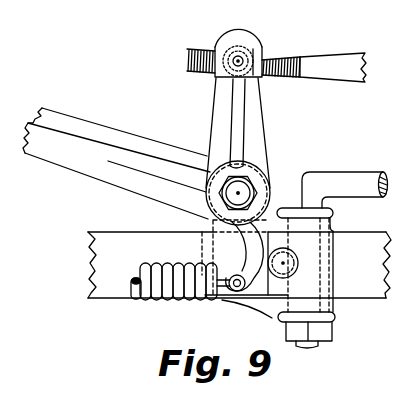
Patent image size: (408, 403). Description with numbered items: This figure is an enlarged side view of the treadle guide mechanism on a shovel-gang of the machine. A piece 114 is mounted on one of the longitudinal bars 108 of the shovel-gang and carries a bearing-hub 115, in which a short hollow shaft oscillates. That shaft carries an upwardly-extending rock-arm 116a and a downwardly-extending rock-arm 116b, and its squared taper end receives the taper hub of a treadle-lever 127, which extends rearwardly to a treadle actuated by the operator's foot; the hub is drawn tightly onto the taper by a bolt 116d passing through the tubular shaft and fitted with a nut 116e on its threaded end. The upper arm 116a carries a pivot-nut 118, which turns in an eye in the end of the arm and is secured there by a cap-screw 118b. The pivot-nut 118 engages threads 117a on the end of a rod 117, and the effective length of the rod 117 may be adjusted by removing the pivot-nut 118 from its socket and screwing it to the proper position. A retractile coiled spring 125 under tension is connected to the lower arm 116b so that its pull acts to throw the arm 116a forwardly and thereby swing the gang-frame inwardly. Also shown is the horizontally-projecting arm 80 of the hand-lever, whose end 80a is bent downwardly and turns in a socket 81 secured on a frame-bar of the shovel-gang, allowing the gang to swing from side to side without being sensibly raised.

The horizontally-projecting arm 80 is at (357, 175).
The downwardly-bent end 80a is at (308, 201).
The socket 81 is at (337, 313).
The longitudinal bar 108 is at (239, 265).
The piece 114 is at (231, 303).
The bearing-hub 115 is at (204, 194).
The upwardly-extending rock-arm 116a is at (250, 134).
The downwardly-extending rock-arm 116b is at (243, 254).
The bolt 116d is at (236, 195).
The nut 116e is at (253, 180).
The rod 117 is at (345, 66).
The threads 117a is at (210, 67).
The pivot-nut 118 is at (219, 45).
The cap-screw 118b is at (260, 45).
The retractile coiled spring 125 is at (153, 299).
The treadle-lever 127 is at (58, 121).